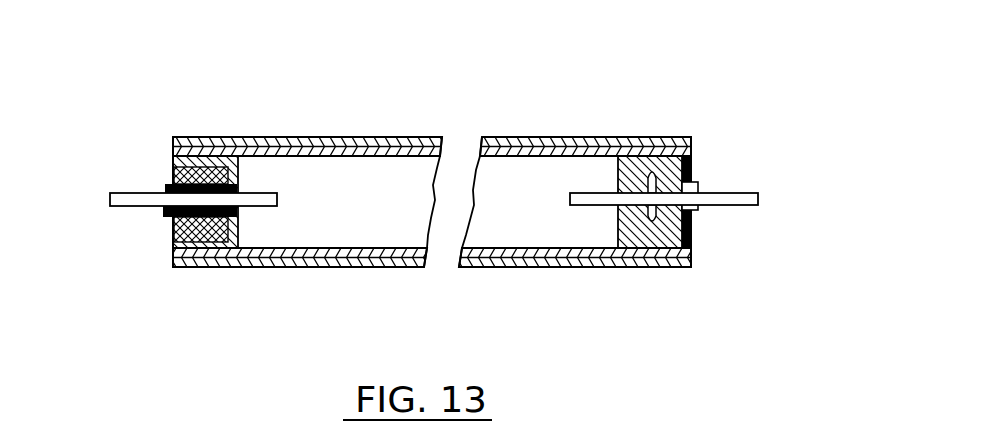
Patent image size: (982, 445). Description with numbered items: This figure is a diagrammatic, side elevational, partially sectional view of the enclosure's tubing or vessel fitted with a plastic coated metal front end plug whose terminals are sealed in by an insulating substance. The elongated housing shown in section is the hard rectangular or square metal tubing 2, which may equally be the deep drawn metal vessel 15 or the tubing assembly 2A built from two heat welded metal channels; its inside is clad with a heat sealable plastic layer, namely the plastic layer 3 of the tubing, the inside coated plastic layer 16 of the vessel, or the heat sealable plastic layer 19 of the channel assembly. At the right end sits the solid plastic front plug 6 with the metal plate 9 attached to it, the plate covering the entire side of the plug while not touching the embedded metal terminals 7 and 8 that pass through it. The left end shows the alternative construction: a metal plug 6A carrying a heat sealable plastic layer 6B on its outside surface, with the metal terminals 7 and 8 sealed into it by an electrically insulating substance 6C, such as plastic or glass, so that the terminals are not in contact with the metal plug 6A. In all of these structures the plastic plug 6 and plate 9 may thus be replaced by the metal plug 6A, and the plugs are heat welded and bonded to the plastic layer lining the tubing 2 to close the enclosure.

The metal tubing 2 is at (450, 180).
The metal vessel 15 is at (450, 180).
The tubing assembly 2A is at (450, 180).
The heat sealable plastic layer 3 is at (450, 180).
The inside coated plastic layer 16 is at (450, 180).
The heat sealable plastic layer 19 is at (315, 138).
The front plug 6 is at (632, 168).
The metal plug 6A is at (170, 183).
The heat sealable plastic layer 6B is at (197, 167).
The electrically insulating substance 6C is at (167, 212).
The metal terminal 7 is at (437, 248).
The metal terminal 8 is at (130, 207).
The metal plate 9 is at (695, 167).